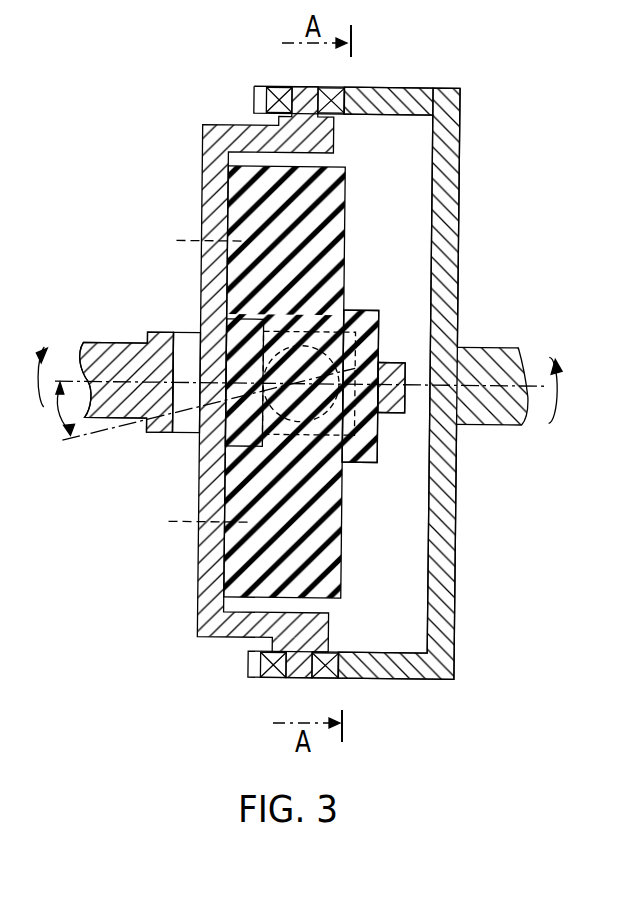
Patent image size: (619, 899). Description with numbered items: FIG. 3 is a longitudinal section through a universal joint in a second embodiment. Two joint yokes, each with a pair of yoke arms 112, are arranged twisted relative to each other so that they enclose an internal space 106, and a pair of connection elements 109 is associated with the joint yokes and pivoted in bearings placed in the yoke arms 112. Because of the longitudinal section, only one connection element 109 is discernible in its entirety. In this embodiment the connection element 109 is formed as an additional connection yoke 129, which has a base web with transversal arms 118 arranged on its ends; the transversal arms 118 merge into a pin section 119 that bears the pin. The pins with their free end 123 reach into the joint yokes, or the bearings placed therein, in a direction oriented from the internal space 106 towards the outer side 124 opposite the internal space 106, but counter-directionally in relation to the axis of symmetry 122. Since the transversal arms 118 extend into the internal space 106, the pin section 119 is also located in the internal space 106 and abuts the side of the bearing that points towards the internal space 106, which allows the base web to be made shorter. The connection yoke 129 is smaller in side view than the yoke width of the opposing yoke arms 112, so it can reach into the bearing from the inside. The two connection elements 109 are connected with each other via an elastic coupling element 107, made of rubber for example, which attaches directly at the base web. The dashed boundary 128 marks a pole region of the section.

The internal space 106 is at (412, 540).
The yoke arms 112 is at (424, 96).
The axis of symmetry 122 is at (481, 356).
The outer side 124 is at (366, 88).
The free end 123 is at (295, 678).
The elastic coupling element 107 is at (243, 178).
The transversal arms 118 is at (237, 633).
The pin section 119 is at (320, 643).
The connection element 109 is at (210, 283).
The connection yoke 129 is at (228, 382).
The magnet pole boundary 128 is at (182, 528).